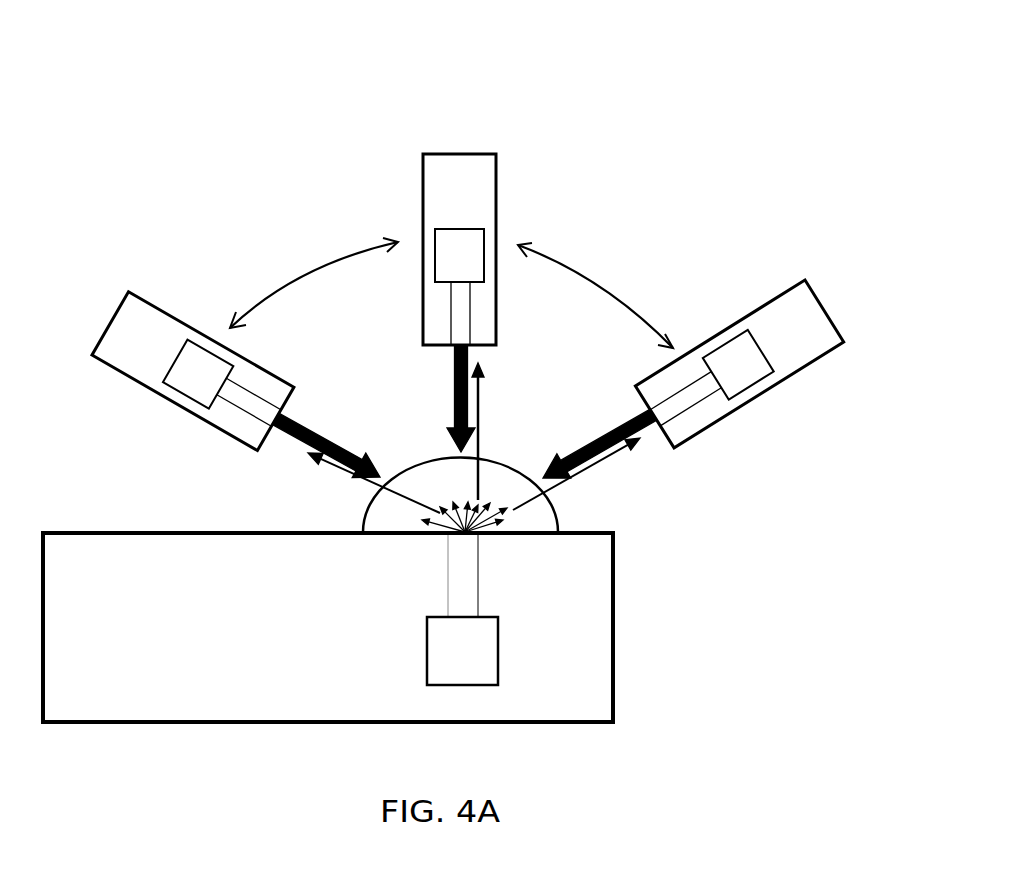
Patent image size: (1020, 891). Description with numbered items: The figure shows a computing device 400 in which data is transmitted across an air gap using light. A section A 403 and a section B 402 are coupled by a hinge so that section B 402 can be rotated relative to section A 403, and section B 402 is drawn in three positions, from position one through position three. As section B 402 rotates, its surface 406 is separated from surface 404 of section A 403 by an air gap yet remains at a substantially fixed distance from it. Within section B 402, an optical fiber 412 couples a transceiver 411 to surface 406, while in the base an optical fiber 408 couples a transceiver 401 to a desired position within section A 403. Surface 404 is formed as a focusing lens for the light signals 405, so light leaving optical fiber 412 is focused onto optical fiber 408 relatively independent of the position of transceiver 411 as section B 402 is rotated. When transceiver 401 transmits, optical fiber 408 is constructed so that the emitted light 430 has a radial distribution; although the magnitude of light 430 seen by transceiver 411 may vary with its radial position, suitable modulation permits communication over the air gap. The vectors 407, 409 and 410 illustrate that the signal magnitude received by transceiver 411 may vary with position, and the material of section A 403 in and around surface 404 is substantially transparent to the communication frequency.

The computing device 400 is at (675, 148).
The transceiver (TR) 401 is at (498, 642).
The section B 402 is at (463, 148).
The section A 403 is at (248, 624).
The surface 404 is at (418, 467).
The light signals 405 is at (455, 380).
The surface 406 is at (480, 342).
The vector 407 is at (610, 468).
The optical fiber 408 is at (477, 553).
The vector 409 is at (332, 472).
The vector 410 is at (482, 410).
The transceiver (TR) 411 is at (750, 377).
The optical fiber 412 is at (688, 402).
The light 430 is at (432, 534).